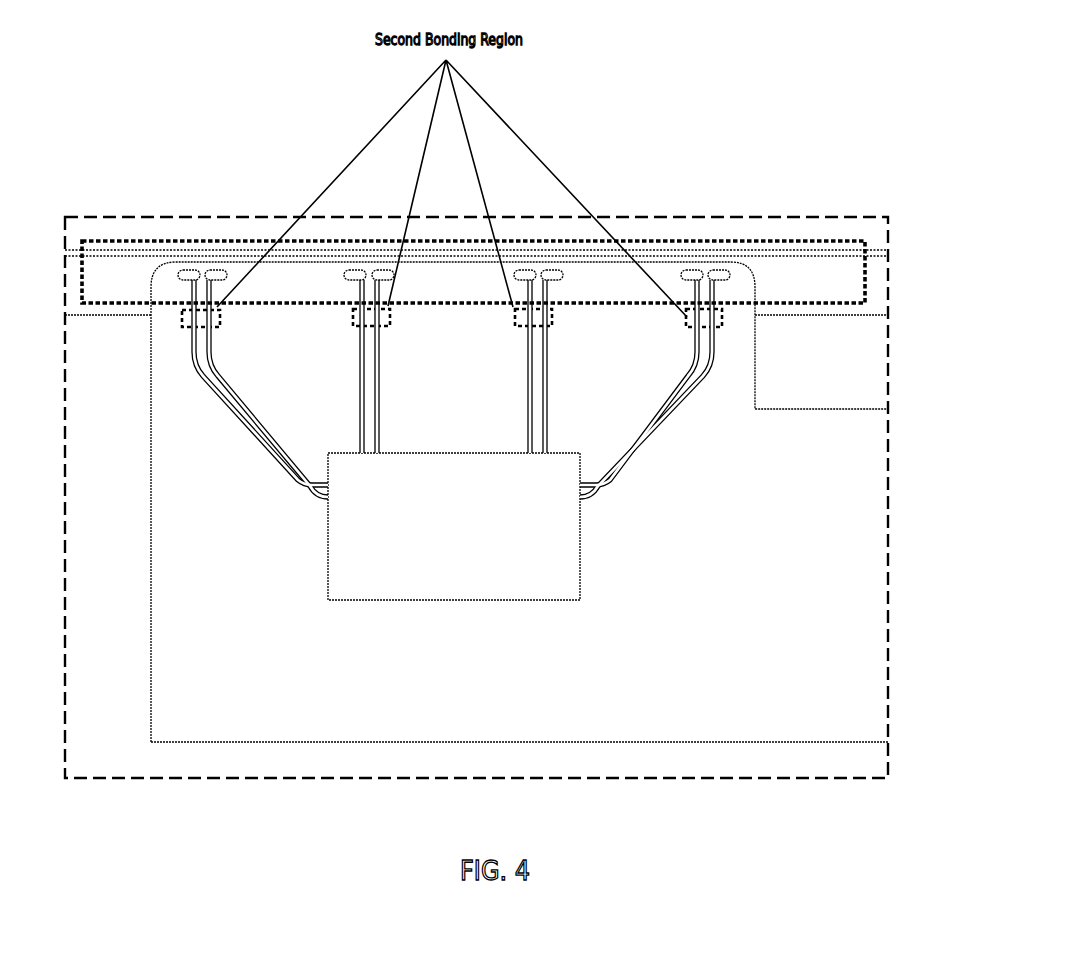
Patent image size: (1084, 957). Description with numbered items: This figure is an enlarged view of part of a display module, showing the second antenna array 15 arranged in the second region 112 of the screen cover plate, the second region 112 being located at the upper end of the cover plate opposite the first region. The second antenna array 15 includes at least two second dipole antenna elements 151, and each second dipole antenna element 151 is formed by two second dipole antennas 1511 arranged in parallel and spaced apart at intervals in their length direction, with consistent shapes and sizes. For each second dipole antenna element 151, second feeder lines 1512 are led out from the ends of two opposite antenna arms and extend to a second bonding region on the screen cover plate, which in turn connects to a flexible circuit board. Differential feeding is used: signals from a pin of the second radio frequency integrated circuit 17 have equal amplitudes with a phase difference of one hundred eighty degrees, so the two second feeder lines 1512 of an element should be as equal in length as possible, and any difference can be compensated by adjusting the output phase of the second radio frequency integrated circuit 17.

The second antenna array 15 is at (240, 130).
The second dipole antenna element 151 is at (266, 168).
The second dipole antenna 1511 is at (719, 270).
The second feeder line 1512 is at (652, 436).
The second radio frequency integrated circuit 17 is at (574, 530).
The second region 112 is at (865, 286).